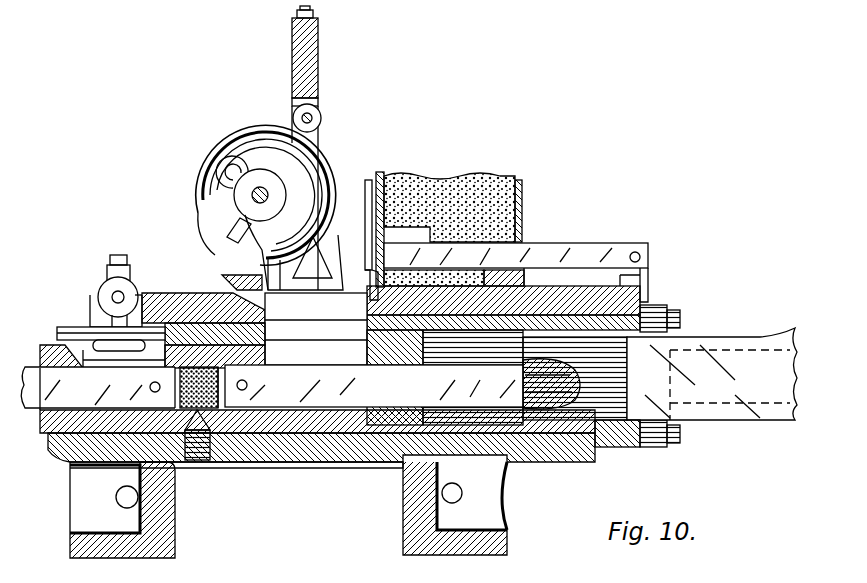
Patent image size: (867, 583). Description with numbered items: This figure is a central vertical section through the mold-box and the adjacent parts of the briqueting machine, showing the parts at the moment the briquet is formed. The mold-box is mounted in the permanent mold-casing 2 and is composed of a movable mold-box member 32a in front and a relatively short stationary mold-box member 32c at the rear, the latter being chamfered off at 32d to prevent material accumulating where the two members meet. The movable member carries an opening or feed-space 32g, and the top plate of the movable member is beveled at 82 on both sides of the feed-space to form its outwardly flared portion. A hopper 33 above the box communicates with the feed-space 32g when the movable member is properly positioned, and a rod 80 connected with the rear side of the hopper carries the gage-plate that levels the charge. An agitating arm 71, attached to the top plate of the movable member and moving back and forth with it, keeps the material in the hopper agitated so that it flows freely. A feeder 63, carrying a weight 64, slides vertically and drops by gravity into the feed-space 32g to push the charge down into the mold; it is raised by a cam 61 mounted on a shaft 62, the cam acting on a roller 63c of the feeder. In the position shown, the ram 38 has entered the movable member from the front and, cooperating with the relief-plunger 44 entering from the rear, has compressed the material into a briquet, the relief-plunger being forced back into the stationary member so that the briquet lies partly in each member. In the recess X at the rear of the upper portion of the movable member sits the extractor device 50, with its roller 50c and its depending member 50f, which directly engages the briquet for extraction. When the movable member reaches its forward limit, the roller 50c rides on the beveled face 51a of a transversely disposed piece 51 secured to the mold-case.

The mold-casing 2 is at (288, 484).
The hopper 33 is at (508, 215).
The ram 38 is at (399, 384).
The relief-plunger 44 is at (119, 387).
The extractor device 50 is at (106, 289).
The roller 50c is at (111, 273).
The depending member 50f is at (95, 345).
The transversely-disposed piece 51 is at (240, 282).
The beveled face 51a is at (218, 278).
The cam 61 is at (246, 132).
The shaft 62 is at (252, 197).
The feeder 63 is at (327, 26).
The roller 63c is at (322, 118).
The weight 64 is at (320, 80).
The agitating arm 71 is at (598, 248).
The rod 80 is at (368, 207).
The beveled top plate portion 82 is at (200, 291).
The movable mold-box member 32a is at (236, 479).
The stationary mold-box member 32c is at (30, 412).
The chamfer 32d is at (38, 438).
The feed-space 32g is at (316, 329).
The recess X is at (142, 292).